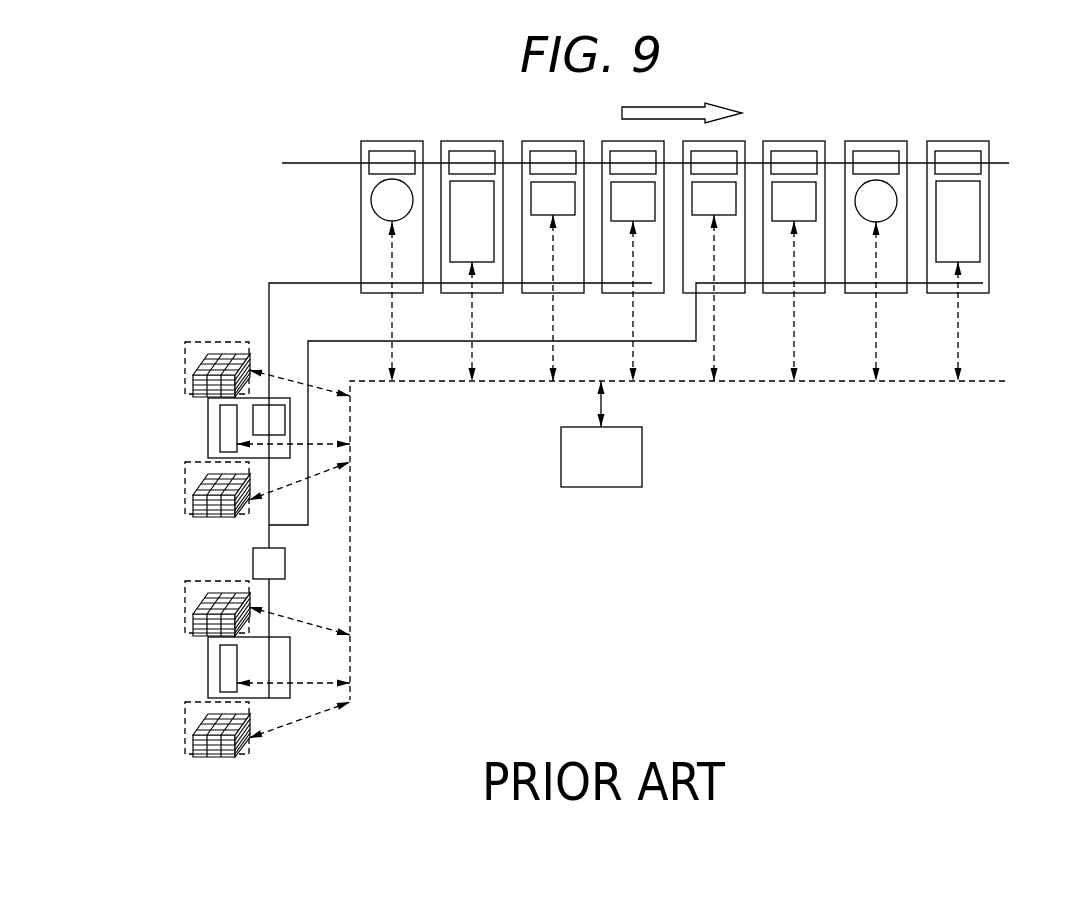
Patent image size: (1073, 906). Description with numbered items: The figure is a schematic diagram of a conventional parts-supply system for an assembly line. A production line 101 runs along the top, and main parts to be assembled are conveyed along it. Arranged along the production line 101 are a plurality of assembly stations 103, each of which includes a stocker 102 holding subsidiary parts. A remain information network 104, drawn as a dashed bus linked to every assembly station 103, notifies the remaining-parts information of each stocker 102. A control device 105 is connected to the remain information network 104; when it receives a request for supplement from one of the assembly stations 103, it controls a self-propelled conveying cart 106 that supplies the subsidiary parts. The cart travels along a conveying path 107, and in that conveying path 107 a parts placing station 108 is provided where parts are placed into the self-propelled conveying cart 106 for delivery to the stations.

The production line 101 is at (293, 165).
The stocker 102 is at (377, 215).
The assembly station 103 is at (392, 141).
The remain information network 104 is at (510, 381).
The control device 105 is at (603, 487).
The self-propelled conveying cart 106 is at (285, 563).
The conveying path 107 is at (648, 283).
The parts placing station 108 is at (290, 665).